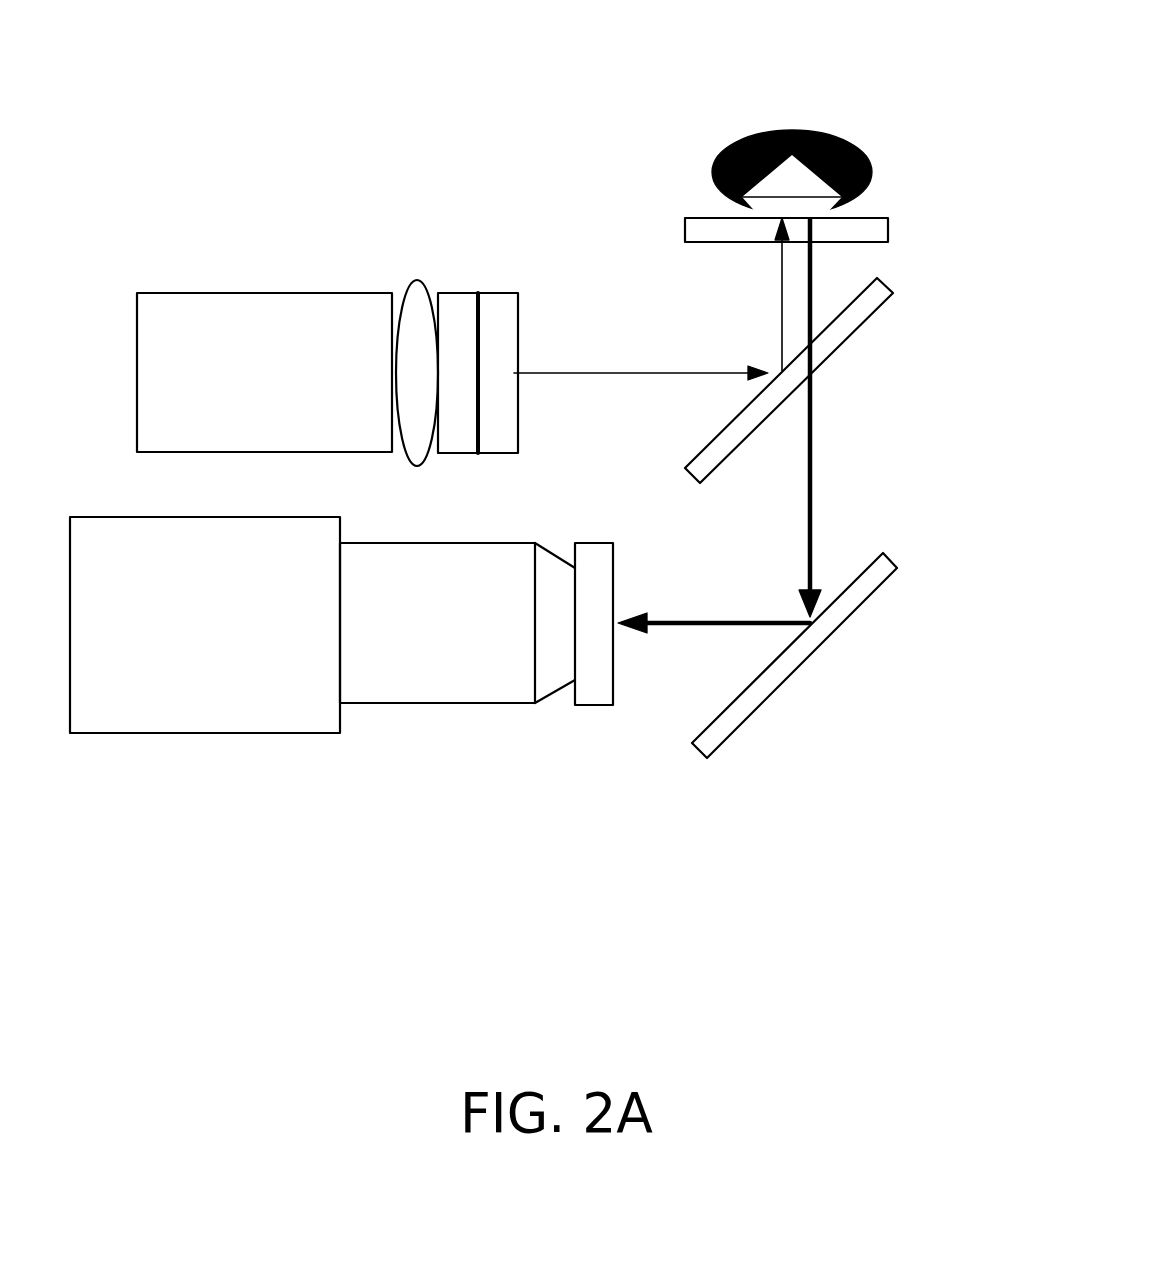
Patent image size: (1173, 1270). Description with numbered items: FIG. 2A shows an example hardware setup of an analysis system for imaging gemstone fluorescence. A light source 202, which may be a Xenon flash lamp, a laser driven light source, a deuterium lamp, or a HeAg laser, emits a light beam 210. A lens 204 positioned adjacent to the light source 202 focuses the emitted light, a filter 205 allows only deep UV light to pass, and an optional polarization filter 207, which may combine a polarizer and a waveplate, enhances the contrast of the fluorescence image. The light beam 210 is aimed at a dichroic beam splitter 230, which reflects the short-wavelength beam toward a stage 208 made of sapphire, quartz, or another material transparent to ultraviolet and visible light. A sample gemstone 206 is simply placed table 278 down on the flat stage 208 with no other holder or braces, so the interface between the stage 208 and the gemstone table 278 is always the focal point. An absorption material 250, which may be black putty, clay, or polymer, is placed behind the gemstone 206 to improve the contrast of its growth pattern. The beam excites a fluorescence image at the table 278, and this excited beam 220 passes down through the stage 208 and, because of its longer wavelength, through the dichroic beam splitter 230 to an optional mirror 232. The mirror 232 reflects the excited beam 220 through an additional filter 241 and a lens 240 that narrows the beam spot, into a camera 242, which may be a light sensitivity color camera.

The light source 202 is at (190, 298).
The lens 204 is at (408, 297).
The filter 205 is at (463, 428).
The polarization filter 207 is at (493, 310).
The light beam 210 is at (780, 320).
The dichroic beam splitter 230 is at (853, 330).
The excited beam 220 is at (845, 484).
The mirror 232 is at (717, 745).
The camera 242 is at (155, 713).
The lens 240 is at (432, 685).
The additional filter 241 is at (592, 693).
The absorption material 250 is at (714, 150).
The table 278 is at (740, 217).
The gemstone 206 is at (837, 208).
The stage 208 is at (876, 236).